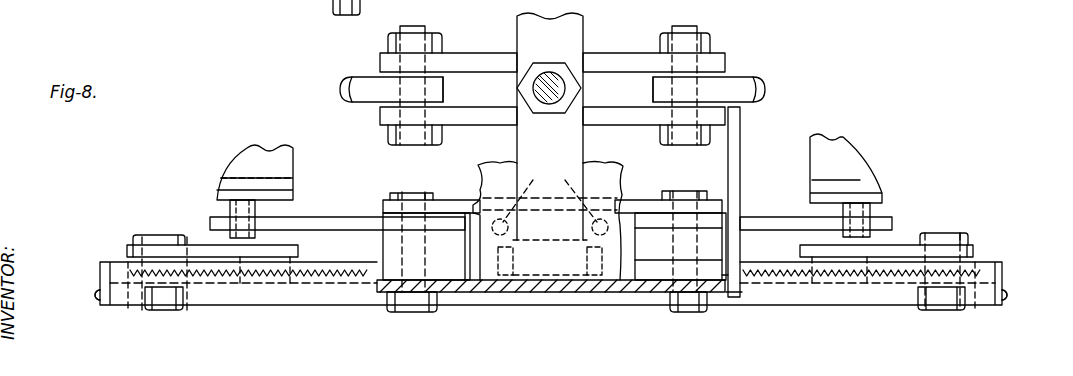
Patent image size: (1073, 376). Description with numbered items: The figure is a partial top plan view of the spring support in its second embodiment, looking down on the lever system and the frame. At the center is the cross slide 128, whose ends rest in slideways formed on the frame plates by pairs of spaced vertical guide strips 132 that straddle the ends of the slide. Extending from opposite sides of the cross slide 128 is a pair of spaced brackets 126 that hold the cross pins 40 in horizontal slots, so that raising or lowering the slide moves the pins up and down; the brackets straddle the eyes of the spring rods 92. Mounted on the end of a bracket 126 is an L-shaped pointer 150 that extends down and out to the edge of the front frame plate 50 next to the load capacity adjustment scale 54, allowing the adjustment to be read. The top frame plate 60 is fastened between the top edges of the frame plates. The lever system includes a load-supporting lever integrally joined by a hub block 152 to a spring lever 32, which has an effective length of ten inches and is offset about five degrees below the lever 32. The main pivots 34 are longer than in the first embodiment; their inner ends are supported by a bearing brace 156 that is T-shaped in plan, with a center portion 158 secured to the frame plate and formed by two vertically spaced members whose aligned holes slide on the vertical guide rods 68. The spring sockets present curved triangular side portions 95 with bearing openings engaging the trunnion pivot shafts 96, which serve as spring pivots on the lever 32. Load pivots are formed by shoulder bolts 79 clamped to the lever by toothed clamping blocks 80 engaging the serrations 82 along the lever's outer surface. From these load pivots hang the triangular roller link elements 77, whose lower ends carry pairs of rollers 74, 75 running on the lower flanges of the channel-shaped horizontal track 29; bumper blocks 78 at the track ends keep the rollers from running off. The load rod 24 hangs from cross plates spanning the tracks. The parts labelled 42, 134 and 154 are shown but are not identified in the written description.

The load rod 24 is at (333, 8).
The horizontal track 29 is at (292, 300).
The load-supporting lever 32 is at (128, 269).
The main pivot 34 is at (420, 314).
The cross pin 40 is at (432, 92).
The shaft 42 is at (549, 80).
The front frame plate 50 is at (738, 282).
The load capacity adjustment scale 54 is at (722, 298).
The top frame plate 60 is at (592, 170).
The vertical guide rod 68 is at (562, 172).
The roller 74 is at (238, 284).
The roller 75 is at (128, 292).
The roller link element 77 is at (300, 251).
The bumper block 78 is at (100, 292).
The shoulder bolt 79 is at (160, 236).
The toothed clamping block 80 is at (182, 306).
The serrations 82 is at (330, 274).
The spring rod 92 is at (356, 85).
The curved triangular side portion 95 is at (258, 162).
The trunnion pivot shaft 96 is at (229, 210).
The bracket 126 is at (380, 60).
The cross slide 128 is at (570, 36).
The vertical guide strip 132 is at (505, 276).
The hex opening 134 is at (535, 118).
The L-shaped pointer 150 is at (735, 300).
The hub block 152 is at (453, 250).
The plate 154 is at (328, 216).
The bearing brace 156 is at (645, 200).
The center portion 158 is at (478, 200).